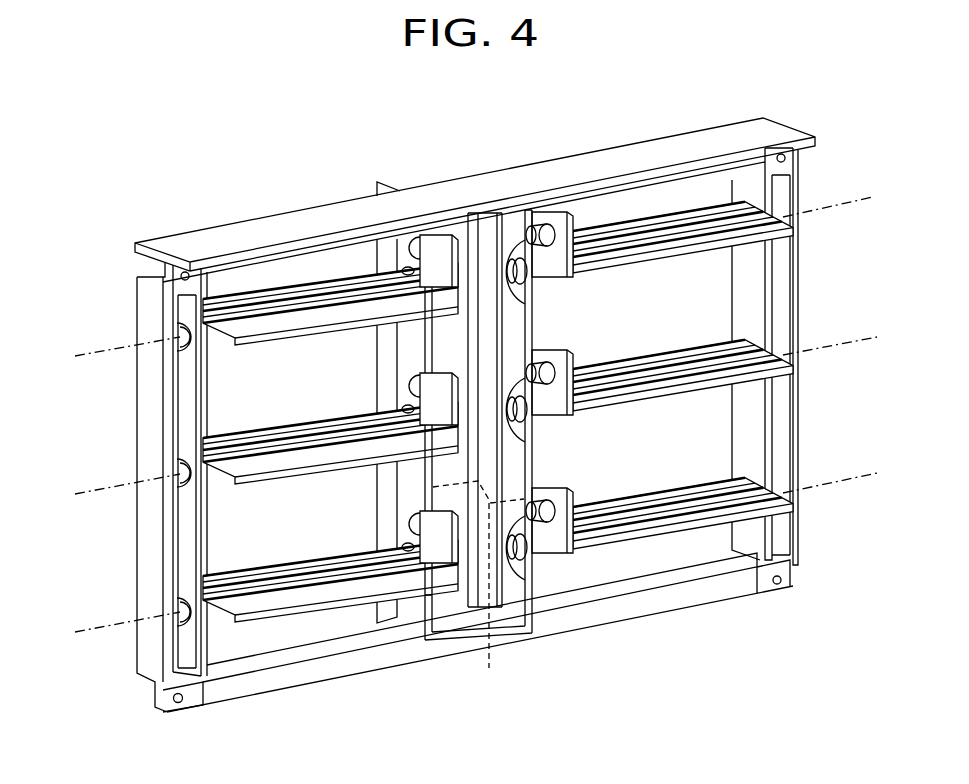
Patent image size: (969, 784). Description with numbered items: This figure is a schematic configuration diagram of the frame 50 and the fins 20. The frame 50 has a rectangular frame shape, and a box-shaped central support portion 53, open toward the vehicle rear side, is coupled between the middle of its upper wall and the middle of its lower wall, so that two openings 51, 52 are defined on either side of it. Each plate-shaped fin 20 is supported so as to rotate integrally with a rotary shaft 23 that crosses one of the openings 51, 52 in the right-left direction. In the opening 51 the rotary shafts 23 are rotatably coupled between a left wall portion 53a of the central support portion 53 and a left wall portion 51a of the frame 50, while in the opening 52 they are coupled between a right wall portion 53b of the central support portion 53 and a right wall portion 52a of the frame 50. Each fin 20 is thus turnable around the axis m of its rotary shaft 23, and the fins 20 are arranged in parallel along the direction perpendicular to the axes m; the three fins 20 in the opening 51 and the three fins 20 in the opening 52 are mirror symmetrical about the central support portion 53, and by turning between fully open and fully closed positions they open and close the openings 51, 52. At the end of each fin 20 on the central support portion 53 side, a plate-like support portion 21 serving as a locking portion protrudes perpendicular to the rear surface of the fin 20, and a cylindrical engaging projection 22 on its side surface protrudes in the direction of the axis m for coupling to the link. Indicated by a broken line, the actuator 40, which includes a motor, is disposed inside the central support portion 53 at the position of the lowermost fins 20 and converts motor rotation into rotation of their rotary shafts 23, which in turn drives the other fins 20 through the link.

The frame 50 is at (778, 108).
The opening 51 is at (395, 368).
The left wall portion 51a is at (183, 412).
The opening 52 is at (742, 186).
The right wall portion 52a is at (762, 312).
The central support portion 53 is at (483, 233).
The left wall portion 53a is at (440, 344).
The right wall portion 53b is at (513, 333).
The fin 20 is at (210, 350).
The support portion 21 is at (427, 253).
The engaging projection 22 is at (460, 257).
The rotary shaft 23 is at (513, 262).
The actuator 40 is at (489, 668).
The axis m is at (465, 422).